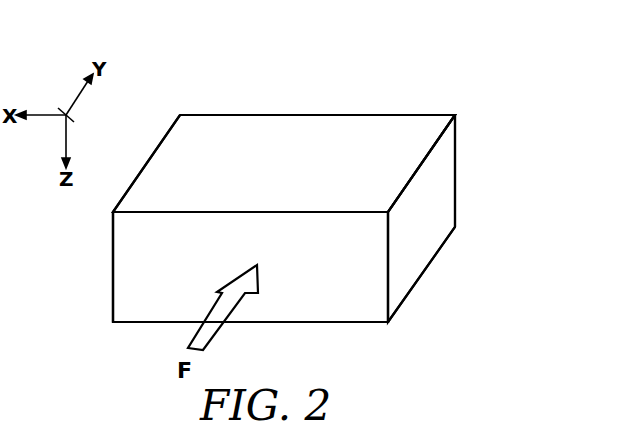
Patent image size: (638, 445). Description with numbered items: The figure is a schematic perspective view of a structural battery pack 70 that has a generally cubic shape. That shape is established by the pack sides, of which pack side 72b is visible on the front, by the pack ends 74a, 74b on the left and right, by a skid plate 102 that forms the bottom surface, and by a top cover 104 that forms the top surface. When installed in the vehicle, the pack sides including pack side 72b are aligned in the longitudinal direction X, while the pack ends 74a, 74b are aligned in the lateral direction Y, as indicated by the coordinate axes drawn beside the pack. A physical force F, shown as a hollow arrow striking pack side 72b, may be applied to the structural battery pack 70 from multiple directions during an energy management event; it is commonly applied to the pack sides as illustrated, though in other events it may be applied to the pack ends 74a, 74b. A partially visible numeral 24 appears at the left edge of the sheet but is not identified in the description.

The structural battery pack 70 is at (255, 80).
The top cover 104 is at (378, 143).
The pack end 74b is at (433, 180).
The pack end 74a is at (113, 248).
The pack side 72b is at (158, 305).
The skid plate 102 is at (343, 325).
The adjacent component (partially shown) 24 is at (14, 325).